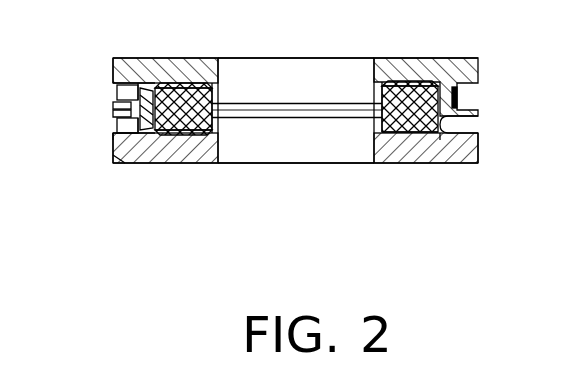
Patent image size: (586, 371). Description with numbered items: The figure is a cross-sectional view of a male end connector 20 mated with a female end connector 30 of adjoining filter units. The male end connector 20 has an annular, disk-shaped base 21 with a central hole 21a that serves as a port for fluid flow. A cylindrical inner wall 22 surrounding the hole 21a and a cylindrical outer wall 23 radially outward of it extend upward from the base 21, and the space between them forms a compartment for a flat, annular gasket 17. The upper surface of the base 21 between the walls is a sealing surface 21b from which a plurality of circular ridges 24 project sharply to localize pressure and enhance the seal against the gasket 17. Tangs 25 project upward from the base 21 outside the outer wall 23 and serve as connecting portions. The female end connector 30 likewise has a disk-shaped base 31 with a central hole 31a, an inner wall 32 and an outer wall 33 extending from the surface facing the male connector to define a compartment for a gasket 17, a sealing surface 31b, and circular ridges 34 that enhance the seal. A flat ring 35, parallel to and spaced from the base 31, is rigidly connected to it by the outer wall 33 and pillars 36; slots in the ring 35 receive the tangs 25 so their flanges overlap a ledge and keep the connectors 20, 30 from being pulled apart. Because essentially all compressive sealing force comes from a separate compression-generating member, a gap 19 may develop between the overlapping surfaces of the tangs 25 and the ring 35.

The gasket 17 is at (458, 108).
The gap 19 is at (115, 113).
The male end connector 20 is at (482, 152).
The base 21 is at (460, 163).
The hole 21a is at (338, 150).
The sealing surface 21b is at (183, 158).
The inner wall 22 is at (222, 142).
The outer wall 23 is at (438, 140).
The circular ridges 24 is at (398, 145).
The tangs 25 is at (133, 157).
The female end connector 30 is at (473, 52).
The base 31 is at (402, 57).
The hole 31a is at (240, 68).
The sealing surface 31b is at (178, 65).
The inner wall 32 is at (370, 82).
The outer wall 33 is at (113, 83).
The circular ridges 34 is at (428, 80).
The ring 35 is at (113, 132).
The pillars 36 is at (115, 106).